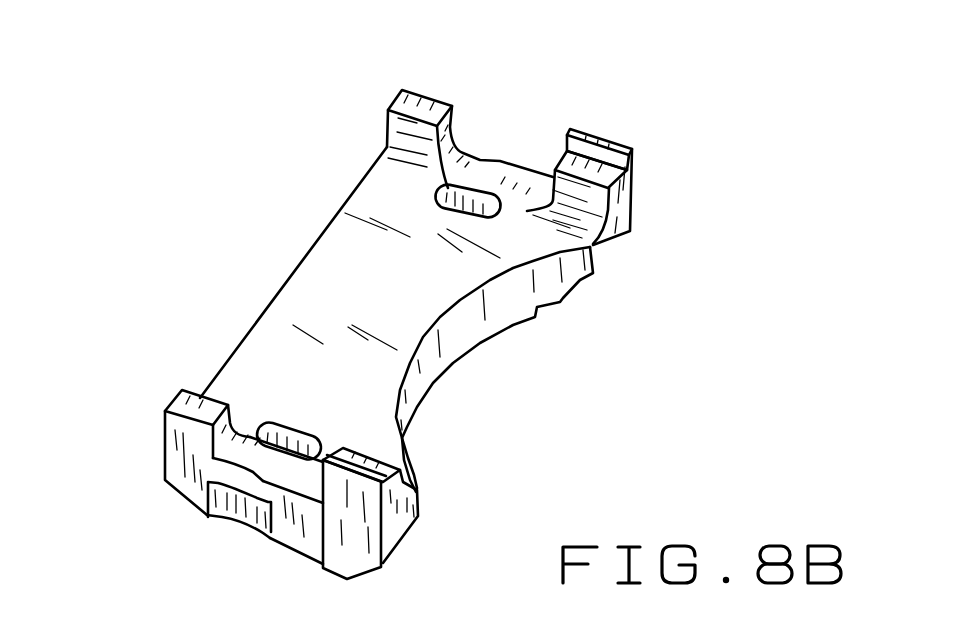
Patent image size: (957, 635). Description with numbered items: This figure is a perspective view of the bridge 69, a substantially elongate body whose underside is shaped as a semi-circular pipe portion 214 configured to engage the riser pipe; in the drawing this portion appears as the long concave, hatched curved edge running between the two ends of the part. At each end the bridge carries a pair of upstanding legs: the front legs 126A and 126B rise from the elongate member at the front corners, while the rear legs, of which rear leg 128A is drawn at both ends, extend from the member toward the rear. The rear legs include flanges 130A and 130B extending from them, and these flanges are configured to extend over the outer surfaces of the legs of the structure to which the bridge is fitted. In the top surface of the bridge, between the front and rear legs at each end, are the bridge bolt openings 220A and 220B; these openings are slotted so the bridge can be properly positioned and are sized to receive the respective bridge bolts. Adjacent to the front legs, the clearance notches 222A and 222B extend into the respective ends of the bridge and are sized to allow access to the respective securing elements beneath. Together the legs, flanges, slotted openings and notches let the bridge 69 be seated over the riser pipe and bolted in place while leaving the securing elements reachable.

The bridge 69 is at (653, 196).
The semi-circular pipe portion 214 is at (453, 337).
The front leg 126A is at (167, 403).
The front leg 126B is at (425, 92).
The rear leg 128A is at (627, 177).
The flange 130A is at (362, 480).
The flange 130B is at (592, 133).
The bridge bolt opening 220A is at (290, 427).
The bridge bolt opening 220B is at (476, 204).
The clearance notch 222A is at (237, 505).
The clearance notch 222B is at (470, 152).